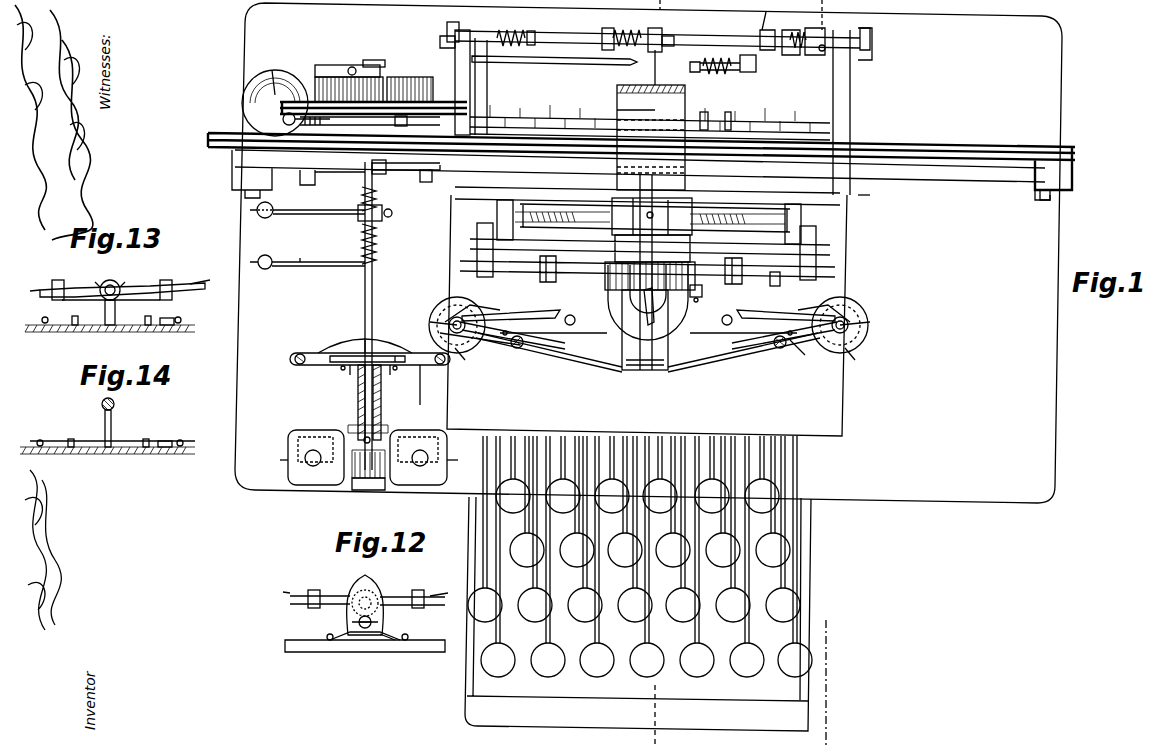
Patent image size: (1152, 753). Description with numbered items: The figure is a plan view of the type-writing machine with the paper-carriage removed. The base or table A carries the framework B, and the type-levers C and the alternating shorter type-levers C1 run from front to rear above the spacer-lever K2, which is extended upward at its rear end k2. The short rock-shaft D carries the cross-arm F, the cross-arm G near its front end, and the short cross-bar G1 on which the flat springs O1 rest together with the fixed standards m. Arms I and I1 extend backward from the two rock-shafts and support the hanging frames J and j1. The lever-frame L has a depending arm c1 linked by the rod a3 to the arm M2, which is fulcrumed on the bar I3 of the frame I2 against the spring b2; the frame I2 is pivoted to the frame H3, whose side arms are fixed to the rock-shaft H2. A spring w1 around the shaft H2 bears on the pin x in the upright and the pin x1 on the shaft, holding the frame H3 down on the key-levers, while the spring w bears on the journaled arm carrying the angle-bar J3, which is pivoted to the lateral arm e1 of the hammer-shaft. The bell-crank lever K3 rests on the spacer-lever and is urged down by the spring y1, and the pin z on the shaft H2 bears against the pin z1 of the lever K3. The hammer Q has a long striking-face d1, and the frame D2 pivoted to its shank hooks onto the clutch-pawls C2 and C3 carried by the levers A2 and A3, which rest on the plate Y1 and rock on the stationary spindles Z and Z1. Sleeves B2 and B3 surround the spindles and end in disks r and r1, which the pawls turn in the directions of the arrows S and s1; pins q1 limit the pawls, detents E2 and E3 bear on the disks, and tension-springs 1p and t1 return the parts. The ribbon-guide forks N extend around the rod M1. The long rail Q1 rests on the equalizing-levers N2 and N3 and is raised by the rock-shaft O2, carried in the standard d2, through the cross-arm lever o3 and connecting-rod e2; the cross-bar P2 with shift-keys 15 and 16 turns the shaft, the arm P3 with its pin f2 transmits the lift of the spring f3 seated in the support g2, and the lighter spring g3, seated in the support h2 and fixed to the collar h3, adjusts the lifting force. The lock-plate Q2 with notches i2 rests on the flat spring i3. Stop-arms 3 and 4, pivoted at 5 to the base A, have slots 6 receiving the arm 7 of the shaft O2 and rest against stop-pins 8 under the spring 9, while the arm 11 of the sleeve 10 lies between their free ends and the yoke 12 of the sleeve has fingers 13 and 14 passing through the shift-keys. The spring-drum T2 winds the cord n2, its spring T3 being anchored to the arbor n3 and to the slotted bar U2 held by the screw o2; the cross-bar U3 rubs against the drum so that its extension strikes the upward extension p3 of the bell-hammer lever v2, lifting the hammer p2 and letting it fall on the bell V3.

In FIG. 1, the base or table A is at (707, 315).
In FIG. 14, the framework B is at (113, 450).
In FIG. 1, the framework B is at (455, 68).
In FIG. 1, the horizontal rail Q1 is at (995, 134).
In FIG. 1, the equalizing-lever N3 is at (275, 165).
In FIG. 1, the equalizing-lever N2 is at (962, 176).
In FIG. 1, the bell V3 is at (275, 103).
In FIG. 1, the cord n2 is at (273, 72).
In FIG. 1, the bell-hammer p2 is at (293, 121).
In FIG. 1, the coil-spring T3 is at (349, 89).
In FIG. 1, the slotted bar U2 is at (330, 65).
In FIG. 1, the tension-screw o2 is at (346, 60).
In FIG. 1, the arbor n3 is at (374, 52).
In FIG. 1, the cross-bar U3 is at (392, 100).
In FIG. 1, the spring-drum T2 is at (447, 105).
In FIG. 1, the bell-hammer lever v2 is at (370, 125).
In FIG. 1, the upward extension p3 is at (407, 124).
In FIG. 1, the horizontal rock-shaft H2 is at (662, 33).
In FIG. 1, the lateral pin x is at (451, 24).
In FIG. 1, the coil tension-spring w1 is at (511, 29).
In FIG. 1, the lateral pin x1 is at (538, 28).
In FIG. 1, the coil tension-spring y1 is at (621, 29).
In FIG. 1, the bell-crank lever K3 is at (657, 30).
In FIG. 1, the lateral pin z1 is at (668, 40).
In FIG. 1, the arm M2 is at (748, 55).
In FIG. 1, the coil tension-spring b2 is at (715, 71).
In FIG. 1, the coil-spring w is at (795, 32).
In FIG. 1, the vertically-suspended frame j1 is at (768, 26).
In FIG. 1, the rear bar I3 is at (575, 64).
In FIG. 1, the rectangular frame H3 is at (488, 86).
In FIG. 1, the rectangular frame I2 is at (490, 98).
In FIG. 1, the projecting pin z is at (661, 67).
In FIG. 1, the spacer-lever k2 is at (655, 80).
In FIG. 1, the short rock-shaft D is at (651, 138).
In FIG. 1, the type-levers C is at (650, 353).
In FIG. 1, the connecting rod or link a3 is at (712, 114).
In FIG. 1, the angle-bar J3 is at (740, 112).
In FIG. 1, the vertically-suspended frame J is at (647, 189).
In FIG. 1, the cross-arm G is at (585, 205).
In FIG. 1, the short cross-bar G1 is at (670, 200).
In FIG. 1, the fixed standards m is at (628, 198).
In FIG. 1, the arms I is at (497, 209).
In FIG. 1, the arms I1 is at (802, 222).
In FIG. 1, the flat springs O1 is at (650, 213).
In FIG. 1, the cross-arm F is at (650, 246).
In FIG. 1, the horizontal rod M1 is at (508, 278).
In FIG. 1, the ribbon-guide forks N is at (548, 282).
In FIG. 1, the lateral arm e1 is at (775, 287).
In FIG. 1, the lever-frame L is at (608, 296).
In FIG. 1, the striking-face d1 is at (654, 315).
In FIG. 1, the rectangular frame D2 is at (628, 368).
In FIG. 1, the hammer Q is at (648, 368).
In FIG. 1, the depending arm c1 is at (697, 300).
In FIG. 1, the arrow S is at (423, 306).
In FIG. 1, the arrow s1 is at (872, 300).
In FIG. 1, the vertical stationary spindle Z is at (464, 312).
In FIG. 1, the vertical stationary spindle Z1 is at (870, 318).
In FIG. 1, the clutch-detent E2 is at (540, 318).
In FIG. 1, the clutch-detent E3 is at (755, 318).
In FIG. 1, the plate Y1 is at (648, 328).
In FIG. 1, the tension-spring 1p is at (468, 330).
In FIG. 1, the lever A2 is at (519, 350).
In FIG. 1, the lever A3 is at (785, 350).
In FIG. 1, the clutch-pawl C2 is at (578, 356).
In FIG. 1, the clutch-pawl C3 is at (714, 356).
In FIG. 1, the pins q1 is at (505, 336).
In FIG. 1, the sleeve B2 is at (443, 338).
In FIG. 1, the sleeve B3 is at (850, 337).
In FIG. 1, the disk r is at (461, 365).
In FIG. 1, the disk r1 is at (861, 365).
In FIG. 1, the tension-spring t1 is at (815, 355).
In FIG. 1, the arm P3 is at (430, 185).
In FIG. 1, the lateral pin f2 is at (398, 172).
In FIG. 13, the rock-shaft O2 is at (104, 282).
In FIG. 14, the rock-shaft O2 is at (114, 404).
In FIG. 1, the rock-shaft O2 is at (380, 396).
In FIG. 1, the adjustable collar h3 is at (385, 218).
In FIG. 1, the connecting-rod e2 is at (310, 180).
In FIG. 1, the cross-arm lever o3 is at (348, 178).
In FIG. 1, the fixed support g2 is at (298, 205).
In FIG. 1, the coil tension-spring f3 is at (326, 214).
In FIG. 1, the fixed support h2 is at (262, 270).
In FIG. 1, the coil-spring g3 is at (305, 262).
In FIG. 13, the stop-arm 3 is at (33, 322).
In FIG. 14, the stop-arm 3 is at (112, 434).
In FIG. 1, the stop-arm 3 is at (312, 353).
In FIG. 13, the stop-arm 4 is at (167, 314).
In FIG. 14, the stop-arm 4 is at (166, 436).
In FIG. 1, the stop-arm 4 is at (631, 558).
In FIG. 13, the pivots 5 is at (118, 314).
In FIG. 14, the pivots 5 is at (112, 437).
In FIG. 1, the pivots 5 is at (298, 364).
In FIG. 14, the longitudinal slot 6 is at (71, 437).
In FIG. 1, the longitudinal slot 6 is at (342, 356).
In FIG. 14, the downwardly-extending arm 7 is at (112, 425).
In FIG. 1, the downwardly-extending arm 7 is at (375, 356).
In FIG. 13, the stop-pins 8 is at (114, 314).
In FIG. 14, the stop-pins 8 is at (145, 437).
In FIG. 1, the stop-pins 8 is at (340, 370).
In FIG. 1, the tension-spring 9 is at (360, 344).
In FIG. 13, the sleeve 10 is at (114, 284).
In FIG. 1, the sleeve 10 is at (358, 410).
In FIG. 13, the downwardly-extending arm 11 is at (121, 312).
In FIG. 1, the downwardly-extending arm 11 is at (363, 382).
In FIG. 13, the yoke 12 is at (140, 300).
In FIG. 12, the yoke 12 is at (410, 608).
In FIG. 1, the yoke 12 is at (385, 440).
In FIG. 13, the finger 13 is at (167, 282).
In FIG. 12, the finger 13 is at (418, 592).
In FIG. 1, the finger 13 is at (418, 457).
In FIG. 13, the finger 14 is at (62, 274).
In FIG. 12, the finger 14 is at (315, 591).
In FIG. 1, the finger 14 is at (316, 457).
In FIG. 13, the shift-key 15 is at (203, 275).
In FIG. 12, the shift-key 15 is at (441, 587).
In FIG. 1, the shift-key 15 is at (455, 462).
In FIG. 13, the shift-key 16 is at (31, 279).
In FIG. 12, the shift-key 16 is at (279, 589).
In FIG. 1, the shift-key 16 is at (278, 462).
In FIG. 12, the cross-bar P2 is at (320, 604).
In FIG. 1, the cross-bar P2 is at (396, 446).
In FIG. 12, the lock-plate Q2 is at (350, 615).
In FIG. 1, the lock-plate Q2 is at (363, 490).
In FIG. 12, the notches i2 is at (364, 610).
In FIG. 12, the flat tension-spring i3 is at (378, 642).
In FIG. 12, the standard d2 is at (358, 645).
In FIG. 1, the spacer-lever K2 is at (654, 621).
In FIG. 1, the type-levers C1 is at (640, 556).